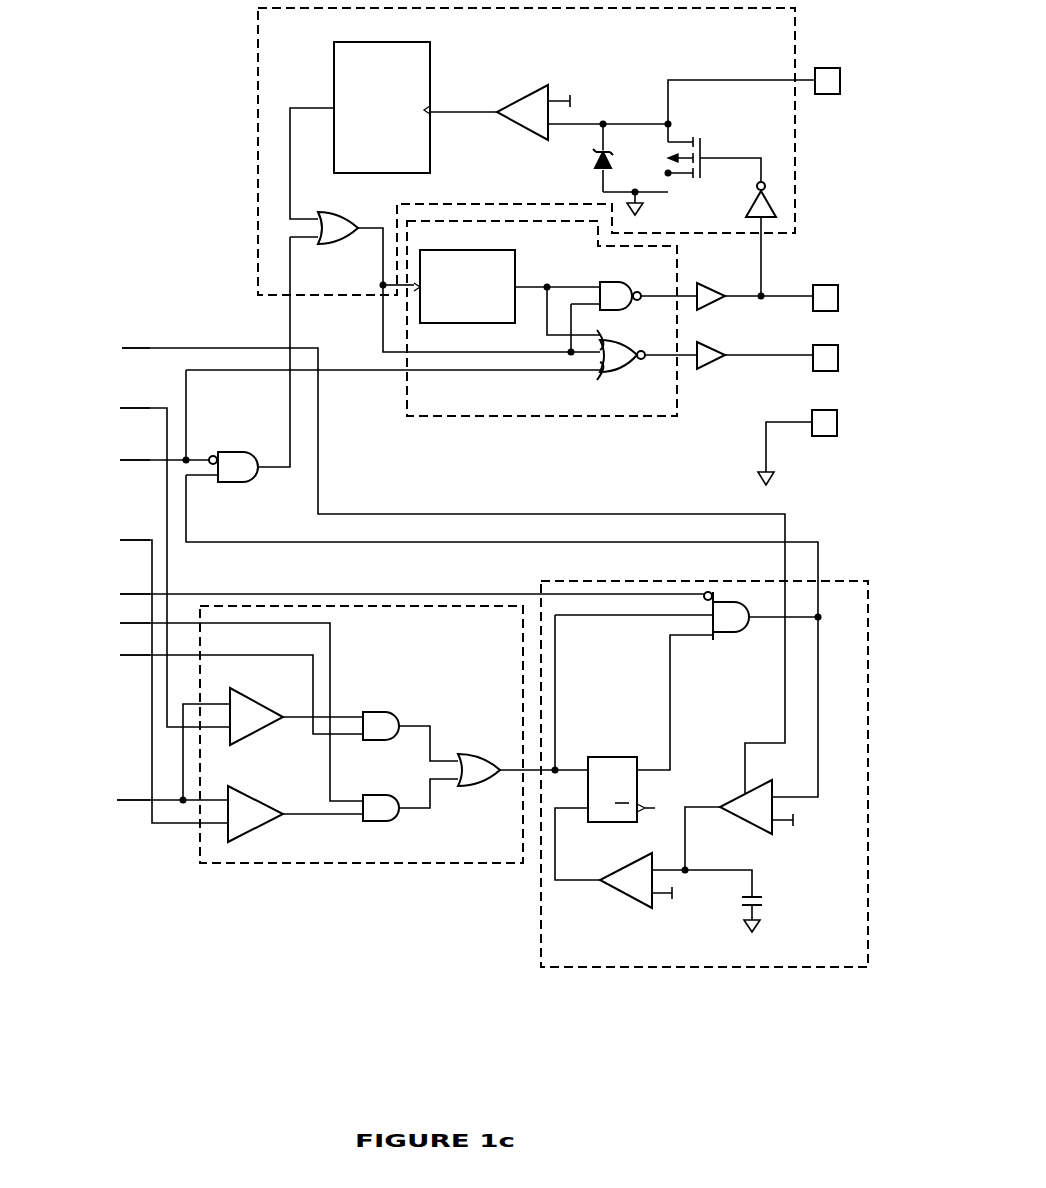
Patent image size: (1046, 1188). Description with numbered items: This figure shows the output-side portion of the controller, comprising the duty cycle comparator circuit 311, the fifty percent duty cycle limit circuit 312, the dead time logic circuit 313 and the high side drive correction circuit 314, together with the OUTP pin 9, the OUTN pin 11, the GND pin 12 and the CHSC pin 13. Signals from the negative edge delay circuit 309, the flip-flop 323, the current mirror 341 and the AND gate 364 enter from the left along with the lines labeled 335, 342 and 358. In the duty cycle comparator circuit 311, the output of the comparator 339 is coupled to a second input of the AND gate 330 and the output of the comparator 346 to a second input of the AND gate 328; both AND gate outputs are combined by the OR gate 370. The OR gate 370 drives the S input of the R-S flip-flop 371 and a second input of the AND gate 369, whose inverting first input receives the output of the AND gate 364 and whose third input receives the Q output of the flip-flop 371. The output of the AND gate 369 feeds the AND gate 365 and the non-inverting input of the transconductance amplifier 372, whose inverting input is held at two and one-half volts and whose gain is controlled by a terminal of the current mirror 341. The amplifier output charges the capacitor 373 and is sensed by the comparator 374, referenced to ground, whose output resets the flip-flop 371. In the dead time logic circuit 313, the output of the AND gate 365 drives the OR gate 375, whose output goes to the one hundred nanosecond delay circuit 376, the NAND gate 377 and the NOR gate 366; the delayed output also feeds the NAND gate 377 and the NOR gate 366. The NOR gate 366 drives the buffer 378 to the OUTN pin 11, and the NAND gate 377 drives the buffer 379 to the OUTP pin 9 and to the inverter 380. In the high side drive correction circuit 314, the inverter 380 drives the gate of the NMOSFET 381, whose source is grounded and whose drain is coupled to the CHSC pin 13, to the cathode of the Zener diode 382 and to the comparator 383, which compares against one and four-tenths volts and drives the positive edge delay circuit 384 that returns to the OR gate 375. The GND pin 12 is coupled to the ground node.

The high side drive correction circuit 314 is at (260, 130).
The dead time logic circuit 313 is at (407, 409).
The duty cycle comparator circuit 311 is at (196, 857).
The 50% duty cycle limit circuit 312 is at (540, 917).
The 200 ns positive edge delay circuit 384 is at (336, 71).
The comparator 383 is at (559, 103).
The Zener diode 382 is at (624, 162).
The NMOSFET 381 is at (704, 146).
The inverter 380 is at (741, 199).
The OR gate 375 is at (338, 216).
The 100 ns delay circuit 376 is at (464, 276).
The NAND gate 377 is at (620, 284).
The NOR gate 366 is at (625, 349).
The buffer 379 is at (721, 287).
The buffer 378 is at (721, 347).
The AND gate 365 is at (233, 457).
The AND gate 369 is at (731, 626).
The comparator 339 is at (256, 707).
The comparator 346 is at (255, 807).
The AND gate 330 is at (378, 714).
The AND gate 328 is at (378, 797).
The OR gate 370 is at (479, 759).
The R-S flip-flop 371 is at (621, 778).
The transconductance amplifier 372 is at (774, 801).
The comparator 374 is at (650, 876).
The capacitor 373 is at (775, 904).
The current mirror 341 is at (97, 348).
The signal 335 is at (97, 408).
The negative edge delay circuit 309 is at (97, 460).
The signal 342 is at (97, 540).
The AND gate 364 is at (97, 591).
The flip-flop 323 is at (84, 613).
The signal 358 is at (96, 800).
The CHSC pin 13 is at (860, 81).
The OUTP pin 9 is at (863, 298).
The OUTN pin 11 is at (863, 358).
The GND pin 12 is at (852, 423).